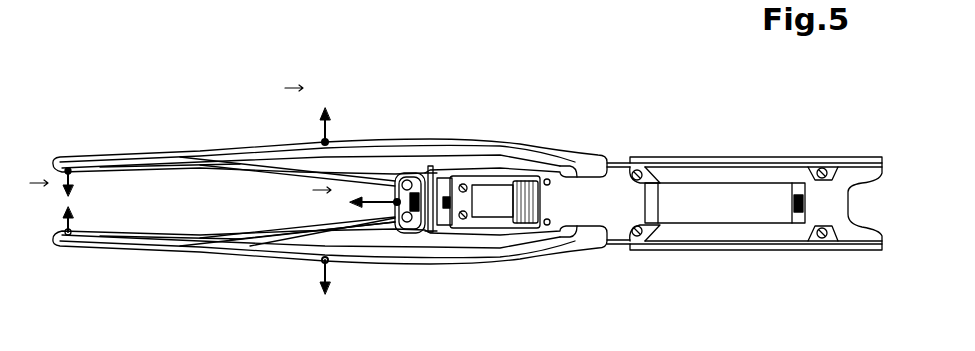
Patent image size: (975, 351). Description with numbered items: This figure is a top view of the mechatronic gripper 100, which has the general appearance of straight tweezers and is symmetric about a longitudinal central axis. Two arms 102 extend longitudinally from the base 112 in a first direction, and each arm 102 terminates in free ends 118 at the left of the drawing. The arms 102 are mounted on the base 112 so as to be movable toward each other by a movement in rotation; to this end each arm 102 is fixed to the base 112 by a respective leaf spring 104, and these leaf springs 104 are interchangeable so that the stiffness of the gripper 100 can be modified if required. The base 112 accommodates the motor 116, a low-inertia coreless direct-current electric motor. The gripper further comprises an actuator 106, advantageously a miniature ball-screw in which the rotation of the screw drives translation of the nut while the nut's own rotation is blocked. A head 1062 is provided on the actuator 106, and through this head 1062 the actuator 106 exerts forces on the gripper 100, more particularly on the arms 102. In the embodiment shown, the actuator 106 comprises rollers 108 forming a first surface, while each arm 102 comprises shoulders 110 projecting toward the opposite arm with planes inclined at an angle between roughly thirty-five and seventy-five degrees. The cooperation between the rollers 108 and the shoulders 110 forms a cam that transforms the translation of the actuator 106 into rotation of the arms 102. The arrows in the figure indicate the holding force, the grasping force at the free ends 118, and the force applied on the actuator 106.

The mechatronic gripper 100 is at (610, 75).
The arms 102 is at (429, 157).
The leaf spring 104 is at (618, 246).
The actuator 106 is at (493, 196).
The rollers 108 is at (409, 168).
The shoulders 110 is at (386, 229).
The base 112 is at (793, 157).
The motor 116 is at (702, 198).
The free ends 118 is at (72, 158).
The head 1062 is at (418, 218).